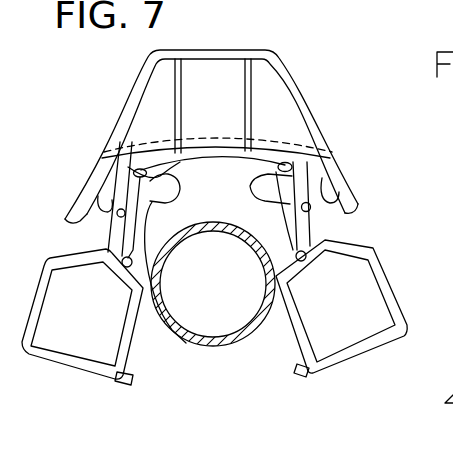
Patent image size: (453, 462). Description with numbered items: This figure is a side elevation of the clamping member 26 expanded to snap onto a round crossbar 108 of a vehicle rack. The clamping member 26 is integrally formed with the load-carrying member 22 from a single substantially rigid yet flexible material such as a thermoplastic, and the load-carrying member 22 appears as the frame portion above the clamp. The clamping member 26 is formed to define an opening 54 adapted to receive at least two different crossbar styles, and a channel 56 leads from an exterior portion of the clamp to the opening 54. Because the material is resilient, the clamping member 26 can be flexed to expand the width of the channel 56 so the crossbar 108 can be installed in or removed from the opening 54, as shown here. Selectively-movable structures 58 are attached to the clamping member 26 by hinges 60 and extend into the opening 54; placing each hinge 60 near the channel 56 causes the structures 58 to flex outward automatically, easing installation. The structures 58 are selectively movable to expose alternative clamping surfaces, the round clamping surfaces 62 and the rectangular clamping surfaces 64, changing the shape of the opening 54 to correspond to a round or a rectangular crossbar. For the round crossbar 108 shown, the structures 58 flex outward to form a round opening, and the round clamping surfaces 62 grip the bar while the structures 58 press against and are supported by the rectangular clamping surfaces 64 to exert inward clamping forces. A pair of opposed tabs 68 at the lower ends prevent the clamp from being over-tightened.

The load-carrying member 22 is at (224, 51).
The clamping member 26 is at (372, 225).
The opening 54 is at (150, 227).
The channel 56 is at (212, 322).
The selectively-movable structures 58 is at (150, 192).
The hinges 60 is at (122, 263).
The round clamping surfaces 62 is at (262, 194).
The rectangular clamping surfaces 64 is at (118, 157).
The opposed tabs 68 is at (125, 388).
The crossbar 108 is at (192, 343).